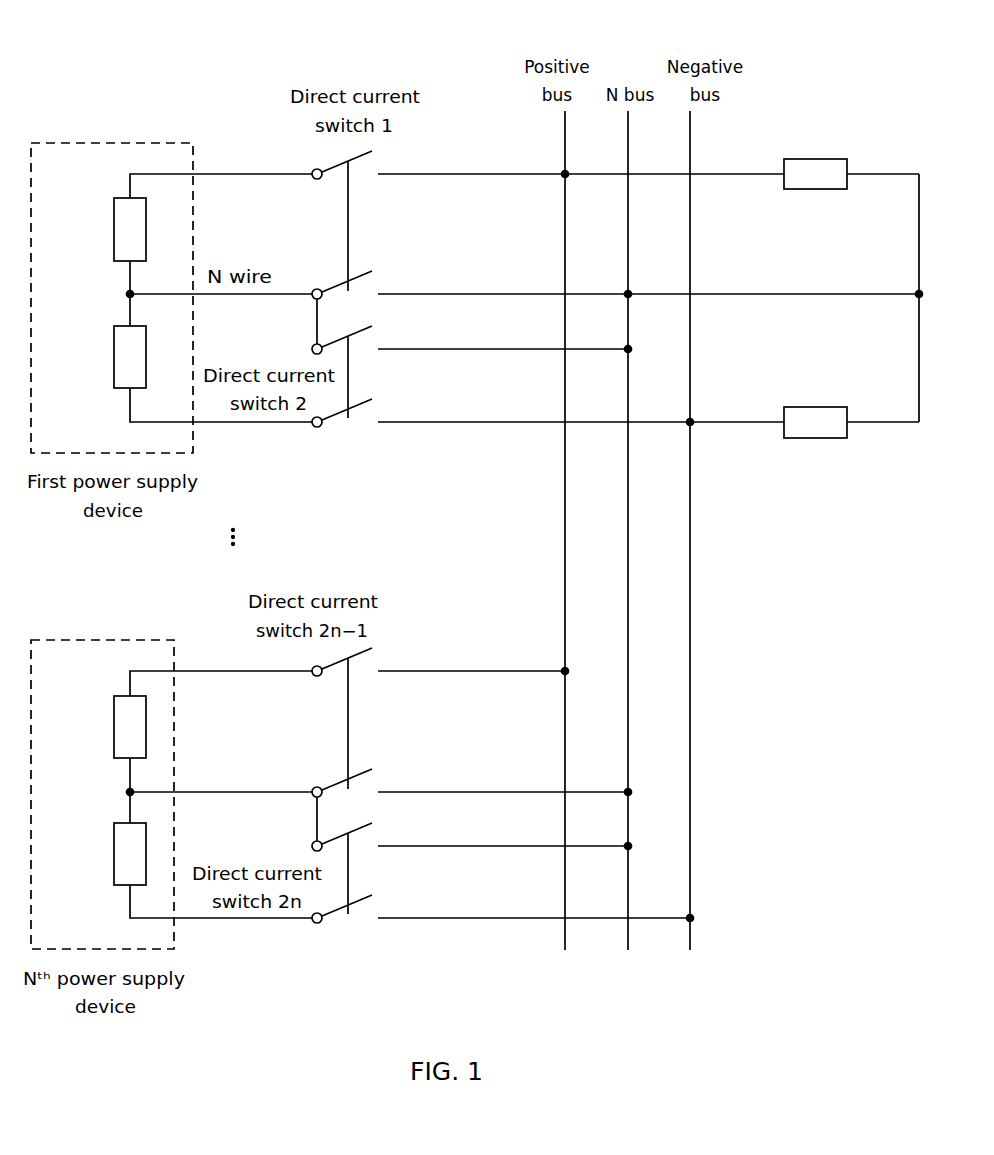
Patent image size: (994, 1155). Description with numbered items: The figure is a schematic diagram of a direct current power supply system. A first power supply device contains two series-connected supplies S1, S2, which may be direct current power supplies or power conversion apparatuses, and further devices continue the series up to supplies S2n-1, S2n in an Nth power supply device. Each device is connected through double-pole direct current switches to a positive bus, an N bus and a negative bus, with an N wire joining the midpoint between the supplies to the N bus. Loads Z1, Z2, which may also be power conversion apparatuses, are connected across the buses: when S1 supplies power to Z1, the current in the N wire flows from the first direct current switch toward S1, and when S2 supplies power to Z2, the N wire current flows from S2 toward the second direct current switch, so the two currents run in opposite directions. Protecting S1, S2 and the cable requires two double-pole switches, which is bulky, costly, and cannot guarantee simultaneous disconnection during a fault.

The direct current power supply S1 is at (102, 229).
The direct current power supply S2 is at (102, 357).
The direct current power supply S2n-1 is at (94, 727).
The direct current power supply S2n is at (100, 854).
The load Z1 is at (815, 191).
The load Z2 is at (815, 439).